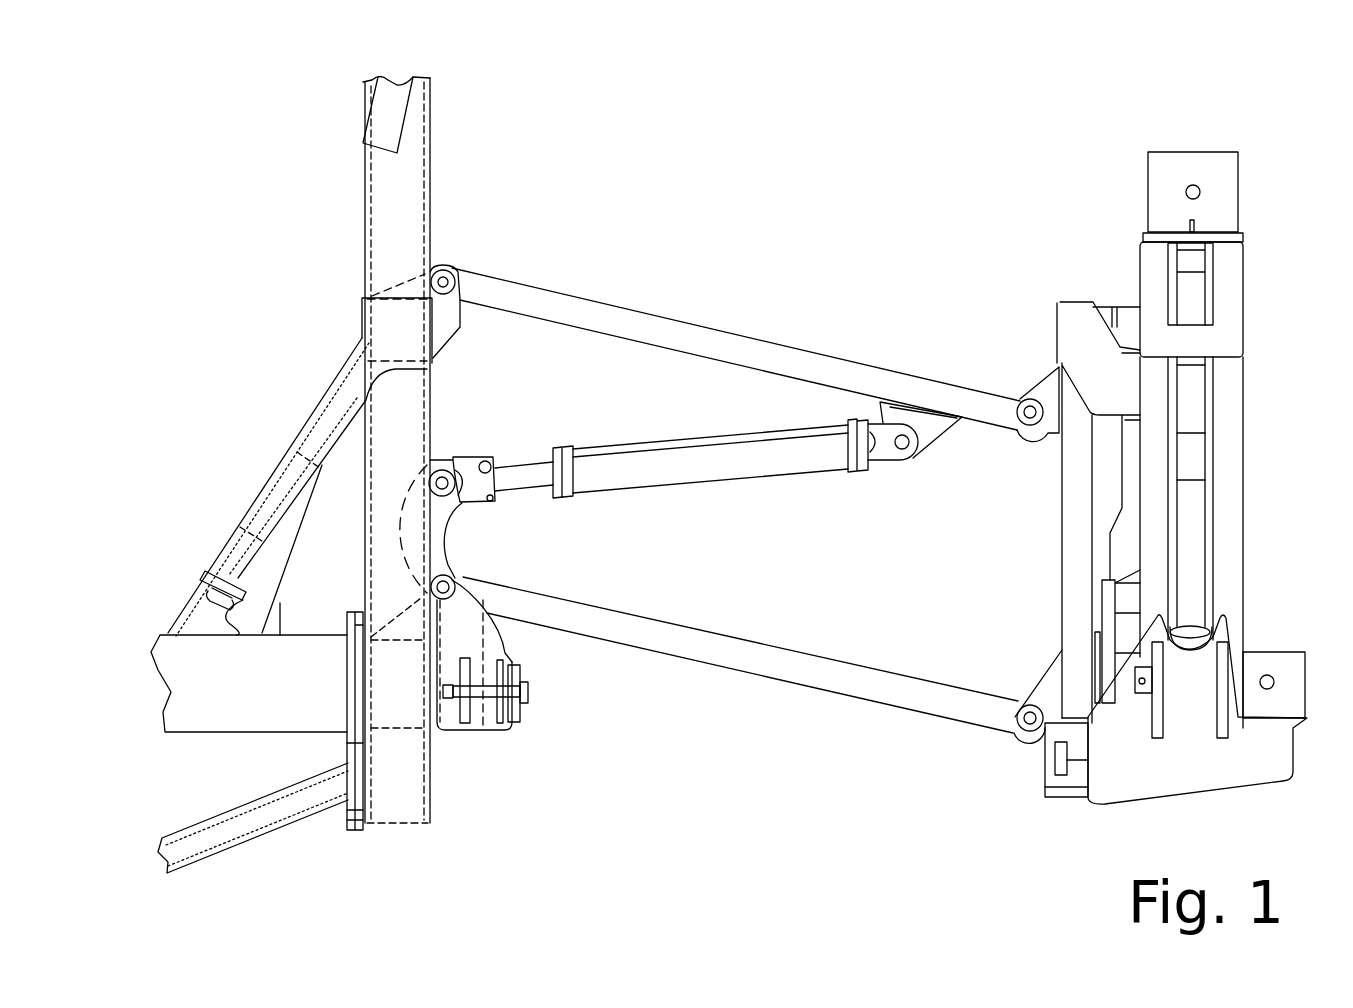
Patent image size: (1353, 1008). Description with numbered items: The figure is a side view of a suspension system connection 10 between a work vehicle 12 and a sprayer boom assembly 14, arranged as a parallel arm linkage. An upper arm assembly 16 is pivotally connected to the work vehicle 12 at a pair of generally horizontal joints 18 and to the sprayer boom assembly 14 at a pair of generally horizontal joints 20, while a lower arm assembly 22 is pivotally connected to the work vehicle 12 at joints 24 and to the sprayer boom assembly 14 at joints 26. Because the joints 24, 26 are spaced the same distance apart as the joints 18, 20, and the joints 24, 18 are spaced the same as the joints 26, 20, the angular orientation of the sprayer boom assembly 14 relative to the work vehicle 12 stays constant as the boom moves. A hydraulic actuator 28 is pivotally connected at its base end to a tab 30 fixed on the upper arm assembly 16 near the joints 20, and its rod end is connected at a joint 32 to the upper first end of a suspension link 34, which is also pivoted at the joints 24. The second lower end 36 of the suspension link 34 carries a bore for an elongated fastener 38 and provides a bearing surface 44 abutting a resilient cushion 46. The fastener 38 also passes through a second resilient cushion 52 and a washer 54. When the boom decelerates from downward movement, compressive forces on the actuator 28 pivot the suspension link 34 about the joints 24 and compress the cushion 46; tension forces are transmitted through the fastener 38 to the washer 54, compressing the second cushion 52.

The suspension system connection 10 is at (664, 165).
The work vehicle 12 is at (438, 137).
The sprayer boom assembly 14 is at (1048, 301).
The upper arm assembly 16 is at (636, 306).
The generally horizontal joints 18 is at (460, 270).
The generally horizontal joints 20 is at (1020, 396).
The lower arm assembly 22 is at (782, 637).
The generally horizontal joints 24 is at (460, 575).
The generally horizontal joints 26 is at (1020, 726).
The hydraulic actuators 28 is at (700, 478).
The tabs 30 is at (927, 432).
The joints 32 is at (445, 466).
The suspension links 34 is at (450, 517).
The second (lower) end 36 is at (490, 731).
The elongated fastener 38 is at (520, 717).
The bearing surface 44 is at (453, 731).
The resilient cushion 46 is at (505, 650).
The second resilient cushion 52 is at (510, 732).
The washer 54 is at (530, 692).